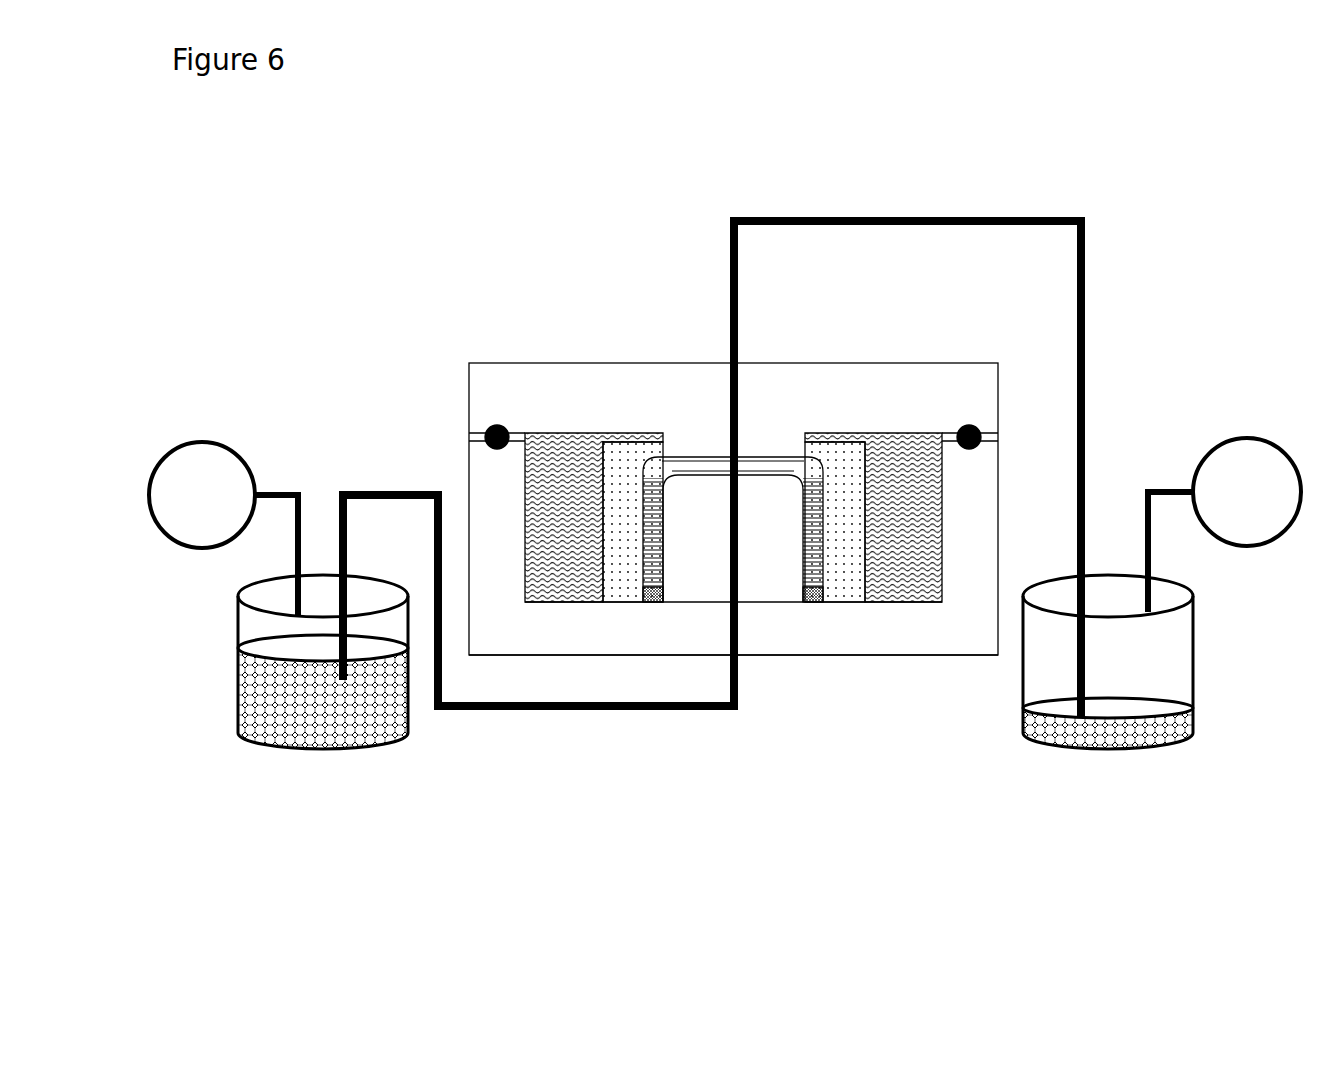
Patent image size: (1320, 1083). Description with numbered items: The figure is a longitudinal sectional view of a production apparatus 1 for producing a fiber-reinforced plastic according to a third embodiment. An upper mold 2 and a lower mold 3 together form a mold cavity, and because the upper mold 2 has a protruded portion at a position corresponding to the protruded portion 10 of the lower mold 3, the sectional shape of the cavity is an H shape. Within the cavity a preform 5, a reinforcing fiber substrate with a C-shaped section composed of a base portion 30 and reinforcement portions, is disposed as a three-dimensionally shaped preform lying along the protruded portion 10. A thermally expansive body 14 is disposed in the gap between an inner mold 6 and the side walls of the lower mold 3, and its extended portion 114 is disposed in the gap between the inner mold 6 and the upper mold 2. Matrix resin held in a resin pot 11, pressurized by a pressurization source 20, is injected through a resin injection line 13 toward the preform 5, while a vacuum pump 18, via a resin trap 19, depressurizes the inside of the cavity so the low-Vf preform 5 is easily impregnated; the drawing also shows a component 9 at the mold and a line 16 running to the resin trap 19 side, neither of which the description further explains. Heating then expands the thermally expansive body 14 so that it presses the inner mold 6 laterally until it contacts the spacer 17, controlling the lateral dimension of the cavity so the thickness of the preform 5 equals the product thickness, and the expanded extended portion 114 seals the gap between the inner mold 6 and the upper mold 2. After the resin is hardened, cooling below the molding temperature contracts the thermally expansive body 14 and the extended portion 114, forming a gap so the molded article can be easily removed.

The production apparatus 1 is at (381, 334).
The upper mold 2 is at (852, 373).
The lower mold 3 is at (787, 648).
The preform 5 is at (660, 460).
The inner mold 6 is at (620, 473).
The electrical contacts 9 is at (980, 430).
The protruded portion 10 is at (775, 573).
The resin pot 11 is at (330, 732).
The resin injection line 13 is at (587, 710).
The thermally expansive body 14 is at (571, 530).
The upper electrical wire 16 is at (900, 217).
The spacer 17 is at (817, 603).
The vacuum pump 18 is at (1248, 547).
The resin trap 19 is at (1133, 740).
The pressurization source 20 is at (202, 565).
The base portion 30 is at (760, 467).
The extended portion 114 is at (645, 440).